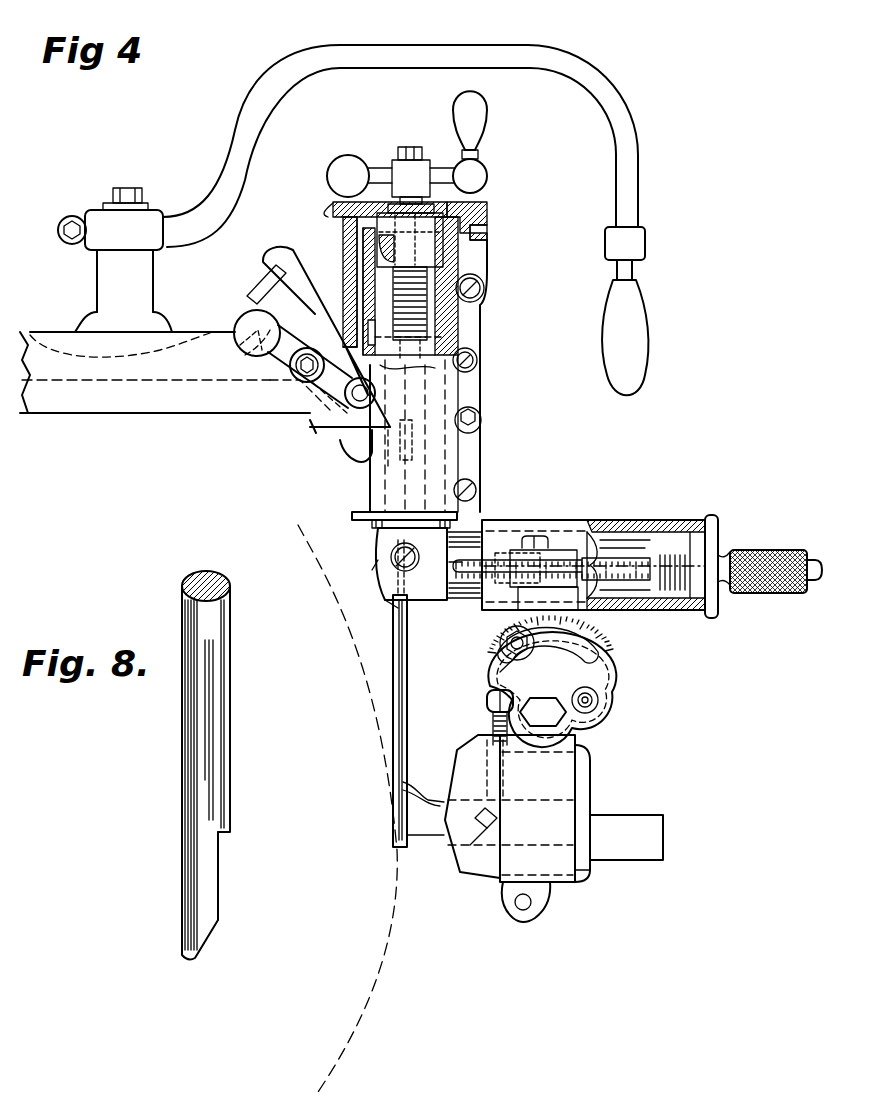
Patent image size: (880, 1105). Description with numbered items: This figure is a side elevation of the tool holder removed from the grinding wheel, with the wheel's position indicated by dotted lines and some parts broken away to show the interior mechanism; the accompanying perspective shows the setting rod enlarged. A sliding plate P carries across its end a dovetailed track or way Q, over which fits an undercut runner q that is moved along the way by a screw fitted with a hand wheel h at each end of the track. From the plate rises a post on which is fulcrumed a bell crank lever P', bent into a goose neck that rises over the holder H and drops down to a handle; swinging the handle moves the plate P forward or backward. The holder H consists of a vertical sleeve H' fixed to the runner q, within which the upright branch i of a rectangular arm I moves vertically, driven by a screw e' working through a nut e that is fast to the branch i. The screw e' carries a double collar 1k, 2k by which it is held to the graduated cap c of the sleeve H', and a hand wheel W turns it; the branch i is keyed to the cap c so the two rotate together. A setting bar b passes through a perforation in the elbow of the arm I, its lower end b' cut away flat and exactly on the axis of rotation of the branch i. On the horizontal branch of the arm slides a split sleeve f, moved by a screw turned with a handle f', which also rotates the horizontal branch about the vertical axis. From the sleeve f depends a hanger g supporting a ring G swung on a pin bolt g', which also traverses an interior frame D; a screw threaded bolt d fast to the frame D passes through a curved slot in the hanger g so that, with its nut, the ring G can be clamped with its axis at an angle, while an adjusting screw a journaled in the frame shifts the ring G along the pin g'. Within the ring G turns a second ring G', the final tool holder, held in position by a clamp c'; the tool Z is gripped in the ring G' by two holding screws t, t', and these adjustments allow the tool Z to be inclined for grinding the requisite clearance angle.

In FIG. 4, the bell crank lever P' is at (404, 159).
In FIG. 4, the sliding plate P is at (175, 300).
In FIG. 4, the runner q is at (304, 308).
In FIG. 4, the track or way Q is at (272, 332).
In FIG. 4, the hand wheel h is at (284, 357).
In FIG. 4, the hand wheel W is at (407, 144).
In FIG. 4, the collar 1k is at (425, 200).
In FIG. 4, the collar 2k is at (436, 210).
In FIG. 4, the cap c is at (311, 195).
In FIG. 4, the nut e is at (425, 272).
In FIG. 4, the screw e' is at (449, 286).
In FIG. 4, the holder H is at (429, 380).
In FIG. 4, the vertical sleeve H' is at (415, 436).
In FIG. 4, the upright branch i is at (480, 302).
In FIG. 4, the rectangular arm I is at (411, 564).
In FIG. 4, the sleeve f is at (579, 549).
In FIG. 4, the handle f' is at (741, 564).
In FIG. 4, the frame D is at (628, 678).
In FIG. 4, the hanger g is at (561, 639).
In FIG. 4, the screw threaded bolt d is at (505, 650).
In FIG. 4, the adjusting screw a is at (600, 702).
In FIG. 4, the pin bolt g' is at (580, 729).
In FIG. 4, the holding screw t is at (484, 717).
In FIG. 4, the ring G is at (545, 808).
In FIG. 4, the second ring G' is at (467, 814).
In FIG. 4, the holding screw t' is at (460, 837).
In FIG. 4, the clamp c' is at (537, 902).
In FIG. 4, the tool Z is at (535, 837).
In FIG. 4, the setting bar b is at (392, 721).
In FIG. 8, the setting bar b is at (193, 765).
In FIG. 4, the lower end of setting bar b' is at (423, 781).
In FIG. 8, the lower end of setting bar b' is at (230, 876).